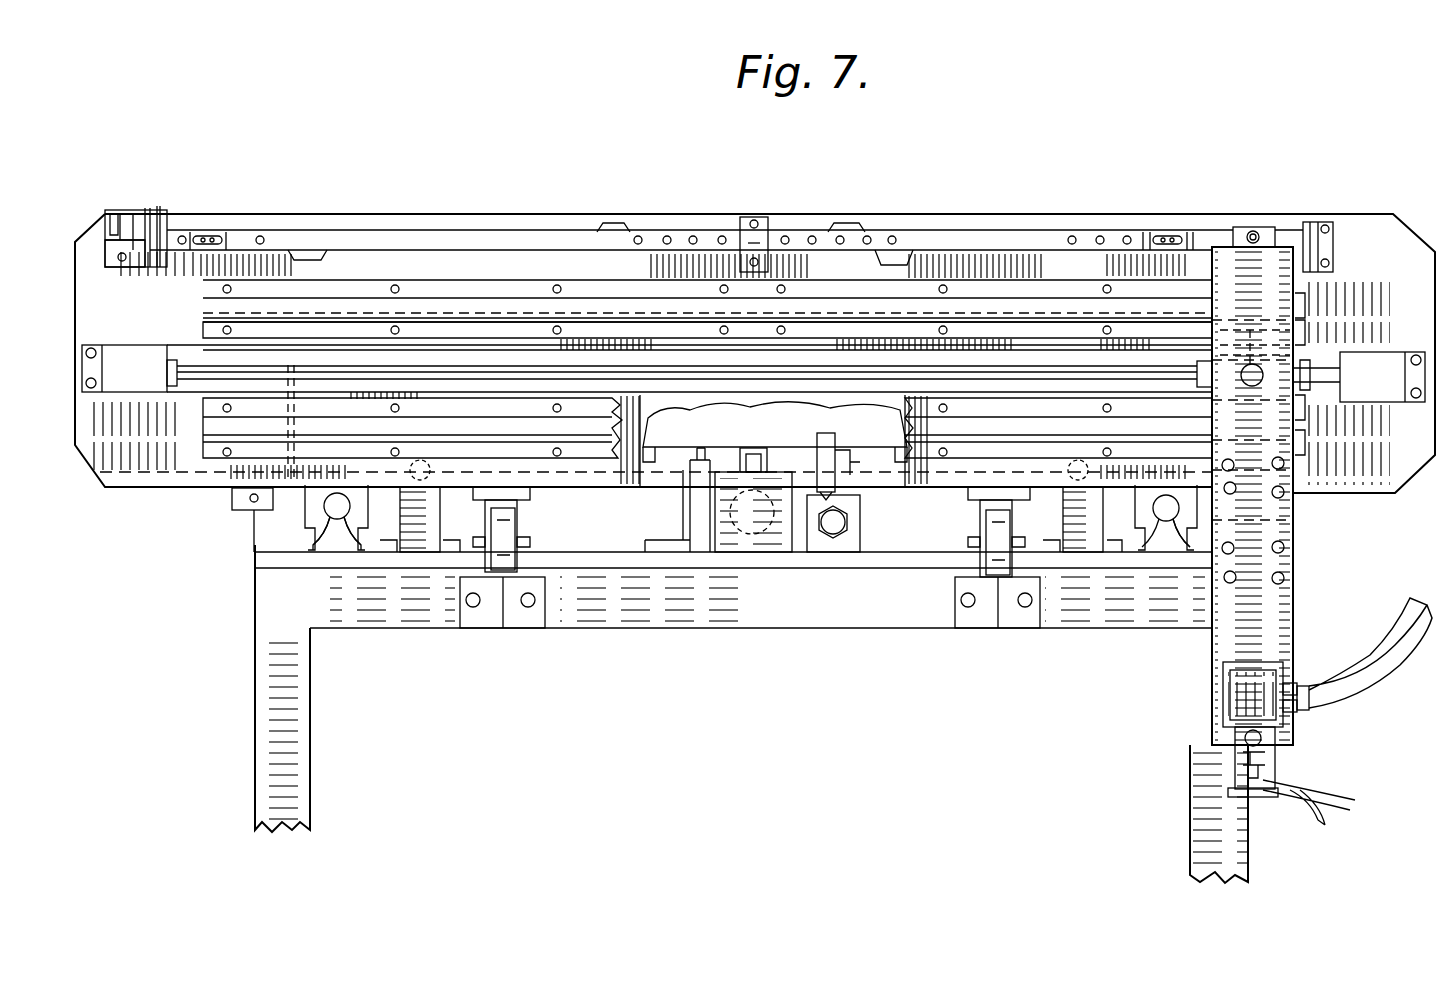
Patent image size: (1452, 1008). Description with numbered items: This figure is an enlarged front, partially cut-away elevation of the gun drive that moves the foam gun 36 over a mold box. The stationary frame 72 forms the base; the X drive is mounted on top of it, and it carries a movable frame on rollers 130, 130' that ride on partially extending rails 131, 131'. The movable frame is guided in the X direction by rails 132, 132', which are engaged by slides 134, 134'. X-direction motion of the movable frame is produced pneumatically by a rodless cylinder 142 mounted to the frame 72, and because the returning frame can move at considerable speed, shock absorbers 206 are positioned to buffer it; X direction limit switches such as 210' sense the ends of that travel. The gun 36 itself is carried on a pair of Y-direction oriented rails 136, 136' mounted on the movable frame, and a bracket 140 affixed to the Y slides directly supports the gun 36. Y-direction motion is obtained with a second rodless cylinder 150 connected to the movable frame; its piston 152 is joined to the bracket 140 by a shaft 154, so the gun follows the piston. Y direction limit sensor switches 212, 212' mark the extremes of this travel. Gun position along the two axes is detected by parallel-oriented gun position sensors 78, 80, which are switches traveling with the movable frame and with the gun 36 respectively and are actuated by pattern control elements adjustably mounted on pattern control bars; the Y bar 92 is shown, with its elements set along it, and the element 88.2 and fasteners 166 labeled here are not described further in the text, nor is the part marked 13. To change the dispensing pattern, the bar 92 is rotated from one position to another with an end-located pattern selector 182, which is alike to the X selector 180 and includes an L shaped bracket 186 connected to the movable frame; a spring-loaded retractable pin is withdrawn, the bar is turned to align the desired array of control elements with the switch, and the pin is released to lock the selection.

The frame 13 is at (304, 688).
The gun 36 is at (1235, 707).
The frame 72 is at (757, 628).
The gun position sensor 78 is at (773, 440).
The gun position sensor 80 is at (1265, 225).
The clamp block 88.2 is at (615, 222).
The pattern control bar 92 is at (950, 237).
The roller 130 is at (534, 529).
The roller 130' is at (959, 532).
The rail 131 is at (502, 635).
The rail 131' is at (997, 635).
The rail 132 is at (319, 566).
The rail 132' is at (1157, 603).
The slide 134 is at (275, 527).
The slide 134' is at (1166, 547).
The rail 136 is at (672, 314).
The rail 136' is at (366, 442).
The bracket 140 is at (1293, 522).
The rodless cylinder 142 is at (745, 520).
The rodless cylinder 150 is at (197, 380).
The piston 152 is at (1320, 345).
The shaft 154 is at (1253, 385).
The fasteners 166 is at (263, 238).
The pattern selector 180 is at (812, 530).
The pattern selector 182 is at (137, 189).
The L shaped bracket 186 is at (118, 257).
The shock absorber 206 is at (417, 540).
The X direction limit switch 210' is at (670, 500).
The Y direction limit sensor switch 212 is at (124, 351).
The Y direction limit sensor switch 212' is at (1359, 396).